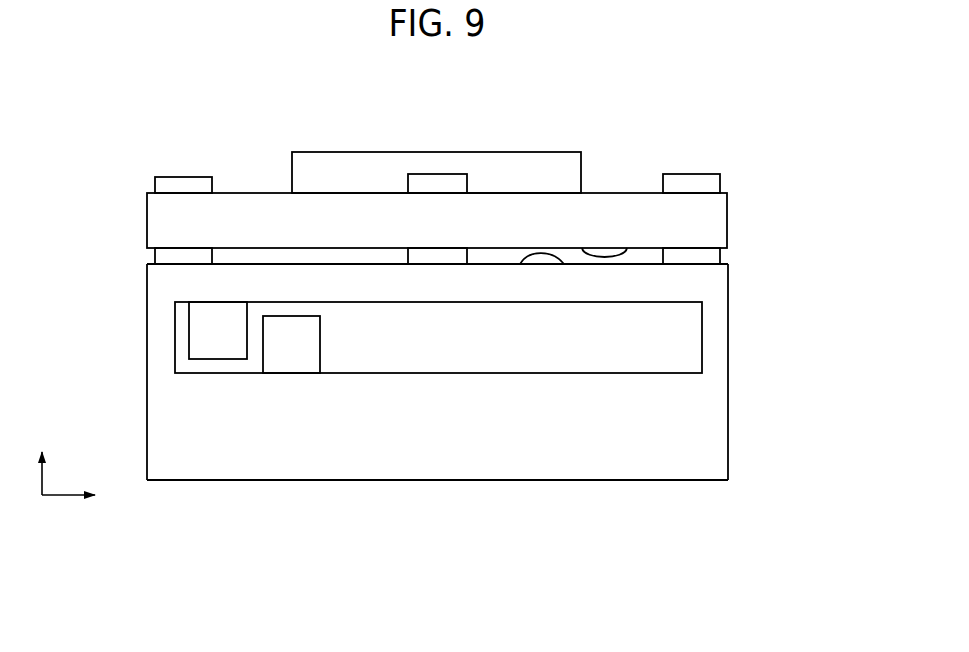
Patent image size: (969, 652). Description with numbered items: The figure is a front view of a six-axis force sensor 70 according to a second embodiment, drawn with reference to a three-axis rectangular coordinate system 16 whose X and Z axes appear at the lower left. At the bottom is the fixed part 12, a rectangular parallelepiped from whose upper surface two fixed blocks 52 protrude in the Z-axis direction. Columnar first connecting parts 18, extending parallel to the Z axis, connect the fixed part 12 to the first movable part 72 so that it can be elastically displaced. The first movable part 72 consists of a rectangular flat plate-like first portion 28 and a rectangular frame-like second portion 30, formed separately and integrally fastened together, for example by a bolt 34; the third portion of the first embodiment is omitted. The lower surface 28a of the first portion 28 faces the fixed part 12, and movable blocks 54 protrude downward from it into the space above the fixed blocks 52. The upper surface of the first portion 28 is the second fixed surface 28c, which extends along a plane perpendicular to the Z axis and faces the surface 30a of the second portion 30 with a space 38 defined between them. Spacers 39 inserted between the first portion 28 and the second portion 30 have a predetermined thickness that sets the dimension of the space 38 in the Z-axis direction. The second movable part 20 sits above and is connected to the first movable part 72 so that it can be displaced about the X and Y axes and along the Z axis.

The six-axis force sensor 70 is at (168, 121).
The second movable part 20 is at (544, 147).
The bolt 34 is at (155, 178).
The first movable part 72 is at (503, 330).
The second portion 30 is at (479, 192).
The surface of the second portion 30a is at (632, 248).
The first portion 28 is at (479, 393).
The surface of the first portion 28a is at (633, 302).
The second fixed surface 28c is at (564, 264).
The spacer 39 is at (160, 258).
The space 38 is at (279, 249).
The first connecting part 18 is at (457, 416).
The movable block 54 is at (202, 340).
The fixed block 52 is at (287, 358).
The fixed part 12 is at (587, 487).
The three-axis rectangular coordinate system 16 is at (56, 518).